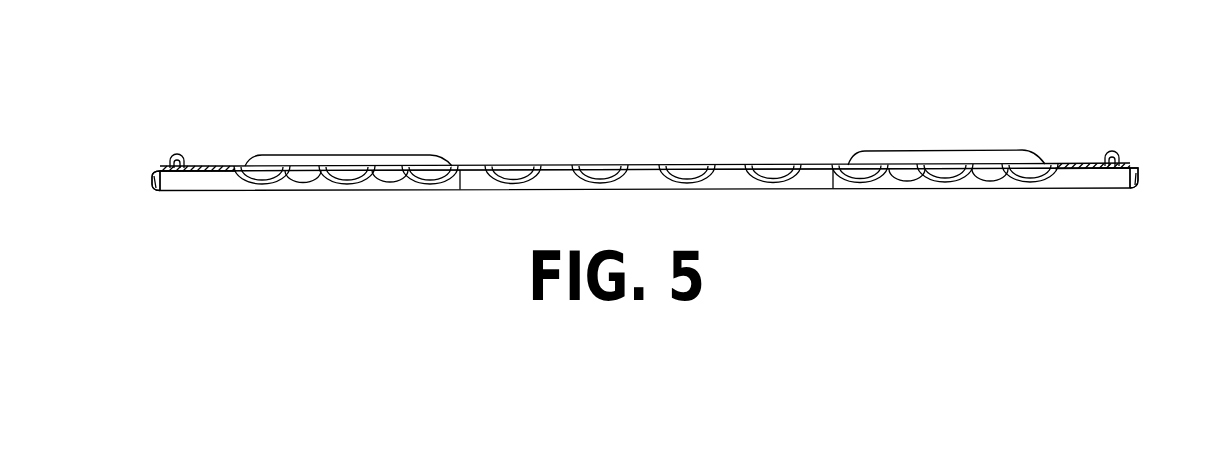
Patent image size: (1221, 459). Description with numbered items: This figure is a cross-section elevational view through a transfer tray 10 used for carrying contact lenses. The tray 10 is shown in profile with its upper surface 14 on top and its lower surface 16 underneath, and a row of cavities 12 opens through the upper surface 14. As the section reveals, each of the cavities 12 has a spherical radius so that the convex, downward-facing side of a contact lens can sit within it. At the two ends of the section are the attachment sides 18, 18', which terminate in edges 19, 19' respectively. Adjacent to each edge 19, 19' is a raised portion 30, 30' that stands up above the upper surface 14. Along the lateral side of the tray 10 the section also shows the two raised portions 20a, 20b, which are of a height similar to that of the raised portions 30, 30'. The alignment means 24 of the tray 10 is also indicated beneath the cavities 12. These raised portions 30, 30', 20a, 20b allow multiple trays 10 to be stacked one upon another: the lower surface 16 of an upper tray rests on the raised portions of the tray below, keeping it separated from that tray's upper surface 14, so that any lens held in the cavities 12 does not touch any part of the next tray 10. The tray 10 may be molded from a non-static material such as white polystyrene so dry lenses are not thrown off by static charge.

The transfer tray 10 is at (219, 160).
The cavities 12 is at (687, 166).
The upper surface 14 is at (821, 165).
The lower surface 16 is at (902, 176).
The attachment side 18 is at (197, 114).
The attachment side 18' is at (1077, 140).
The edge 19 is at (124, 167).
The edge 19' is at (1164, 166).
The raised portion 20a is at (334, 154).
The raised portion 20b is at (958, 150).
The alignment means 24 is at (304, 186).
The raised portion 30 is at (163, 138).
The raised portion 30' is at (1110, 136).